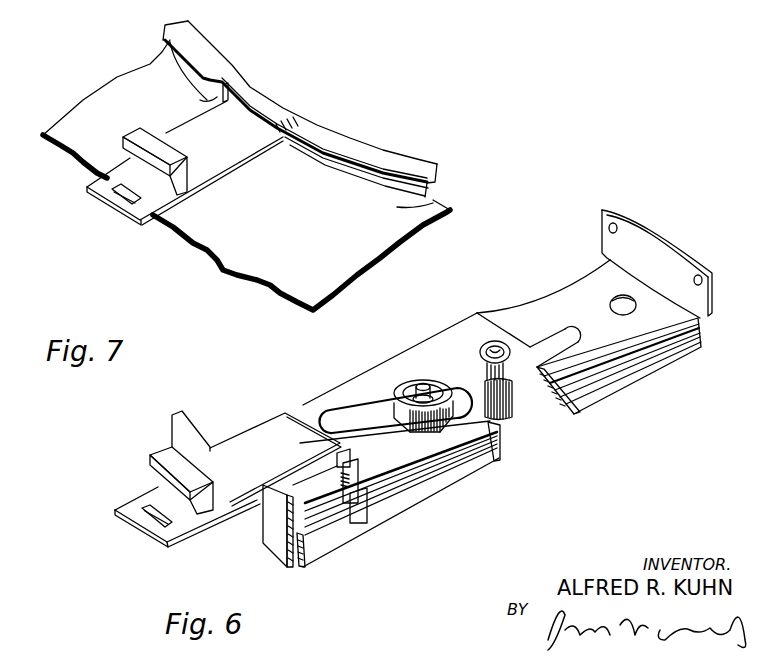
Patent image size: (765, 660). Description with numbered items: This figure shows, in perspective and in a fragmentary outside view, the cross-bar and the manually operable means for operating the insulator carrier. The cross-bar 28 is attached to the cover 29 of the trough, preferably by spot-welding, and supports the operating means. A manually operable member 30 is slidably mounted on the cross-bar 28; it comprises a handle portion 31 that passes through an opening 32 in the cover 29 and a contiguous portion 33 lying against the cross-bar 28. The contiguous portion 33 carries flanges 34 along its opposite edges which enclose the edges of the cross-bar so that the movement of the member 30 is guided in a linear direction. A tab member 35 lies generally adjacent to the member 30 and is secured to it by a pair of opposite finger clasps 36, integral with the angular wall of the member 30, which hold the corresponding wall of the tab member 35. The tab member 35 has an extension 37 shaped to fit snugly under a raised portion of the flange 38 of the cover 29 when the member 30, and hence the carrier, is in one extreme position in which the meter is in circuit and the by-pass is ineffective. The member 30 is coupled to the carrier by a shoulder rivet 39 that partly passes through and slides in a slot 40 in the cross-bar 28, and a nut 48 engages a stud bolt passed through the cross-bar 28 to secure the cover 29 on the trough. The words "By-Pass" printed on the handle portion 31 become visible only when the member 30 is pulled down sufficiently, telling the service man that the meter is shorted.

In FIG. 6, the cross-bar 28 is at (641, 357).
In FIG. 7, the cover 29 is at (449, 208).
In FIG. 7, the manually operable member 30 is at (112, 215).
In FIG. 6, the manually operable member 30 is at (138, 544).
In FIG. 7, the handle portion 31 is at (217, 180).
In FIG. 6, the handle portion 31 is at (247, 507).
In FIG. 7, the opening 32 is at (226, 96).
In FIG. 6, the contiguous portion 33 is at (370, 493).
In FIG. 6, the flanges 34 is at (482, 456).
In FIG. 7, the tab member 35 is at (233, 110).
In FIG. 6, the tab member 35 is at (274, 435).
In FIG. 6, the finger clasps 36 is at (362, 495).
In FIG. 6, the extension 37 is at (163, 457).
In FIG. 7, the flange 38 is at (343, 147).
In FIG. 6, the shoulder rivet 39 is at (523, 413).
In FIG. 6, the slot 40 is at (547, 350).
In FIG. 6, the nut 48 is at (427, 380).